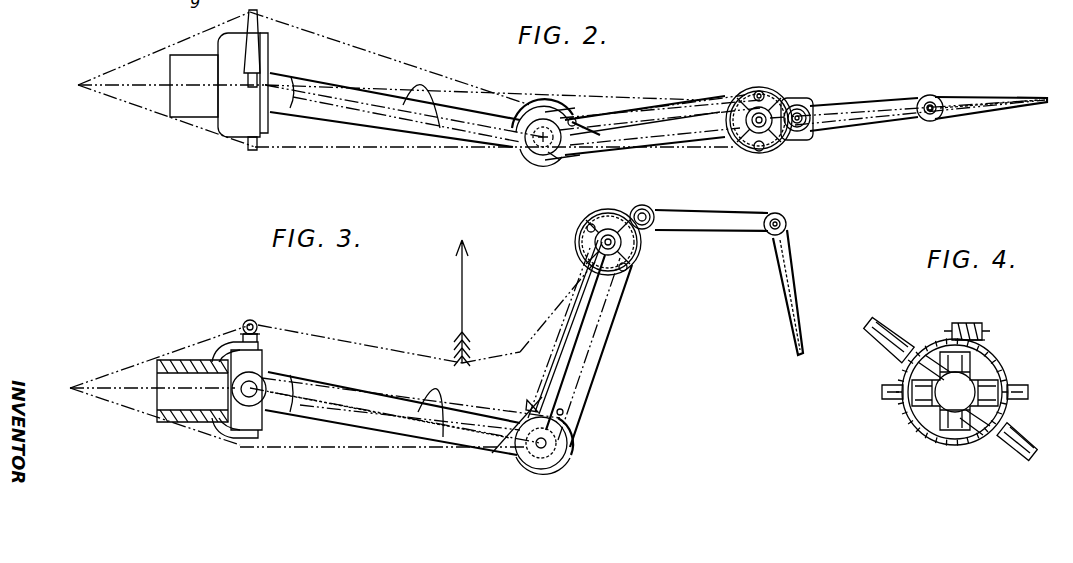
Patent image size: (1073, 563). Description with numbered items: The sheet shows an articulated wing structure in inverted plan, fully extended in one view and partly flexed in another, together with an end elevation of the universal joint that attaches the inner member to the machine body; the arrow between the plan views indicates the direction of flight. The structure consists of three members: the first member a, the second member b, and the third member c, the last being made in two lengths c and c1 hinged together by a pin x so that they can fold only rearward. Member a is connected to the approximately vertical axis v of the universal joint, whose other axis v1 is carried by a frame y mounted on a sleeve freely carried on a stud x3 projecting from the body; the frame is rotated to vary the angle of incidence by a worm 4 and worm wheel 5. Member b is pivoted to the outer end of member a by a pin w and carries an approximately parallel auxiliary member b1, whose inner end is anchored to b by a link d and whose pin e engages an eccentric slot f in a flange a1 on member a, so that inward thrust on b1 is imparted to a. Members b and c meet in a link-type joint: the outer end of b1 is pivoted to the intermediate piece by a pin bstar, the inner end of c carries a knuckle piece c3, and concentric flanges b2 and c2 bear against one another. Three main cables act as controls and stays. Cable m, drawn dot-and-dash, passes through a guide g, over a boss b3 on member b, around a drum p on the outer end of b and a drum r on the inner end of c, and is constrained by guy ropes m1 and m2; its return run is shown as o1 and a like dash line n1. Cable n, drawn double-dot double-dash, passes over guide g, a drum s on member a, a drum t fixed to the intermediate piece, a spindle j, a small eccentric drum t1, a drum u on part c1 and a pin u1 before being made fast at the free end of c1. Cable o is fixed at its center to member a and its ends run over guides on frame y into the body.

In FIG. 2, the cable o is at (162, 64).
In FIG. 3, the cable o is at (116, 375).
In FIG. 2, the lower limit line of motion o1 is at (143, 110).
In FIG. 3, the lower limit line of motion o1 is at (100, 414).
In FIG. 2, the guide g is at (252, 92).
In FIG. 2, the member a is at (395, 110).
In FIG. 3, the member a is at (392, 413).
In FIG. 2, the flange a1 is at (522, 105).
In FIG. 2, the drum u is at (542, 152).
In FIG. 3, the drum u is at (520, 452).
In FIG. 2, the cable m is at (486, 97).
In FIG. 3, the cable m is at (370, 420).
In FIG. 2, the guy rope m1 is at (624, 95).
In FIG. 3, the guy rope m1 is at (520, 384).
In FIG. 2, the guy rope m2 is at (660, 114).
In FIG. 3, the guy rope m2 is at (526, 354).
In FIG. 2, the cable n is at (950, 96).
In FIG. 3, the cable n is at (775, 240).
In FIG. 2, the angle of rotation n1 is at (715, 148).
In FIG. 2, the slot f is at (568, 105).
In FIG. 3, the slot f is at (562, 408).
In FIG. 2, the pin e is at (578, 112).
In FIG. 3, the pin e is at (525, 405).
In FIG. 2, the link d is at (590, 136).
In FIG. 3, the link d is at (511, 425).
In FIG. 2, the member b is at (645, 125).
In FIG. 3, the member b is at (589, 351).
In FIG. 2, the second member b1 is at (700, 97).
In FIG. 3, the second member b1 is at (560, 312).
In FIG. 2, the flange b2 is at (778, 88).
In FIG. 2, the boss b3 is at (565, 155).
In FIG. 3, the boss b3 is at (575, 448).
In FIG. 2, the pin bstar is at (757, 92).
In FIG. 2, the drum s is at (554, 166).
In FIG. 3, the drum s is at (553, 463).
In FIG. 2, the drum t is at (765, 152).
In FIG. 3, the drum t is at (600, 210).
In FIG. 2, the small drum t1 is at (805, 130).
In FIG. 3, the small drum t1 is at (660, 228).
In FIG. 2, the flange c2 is at (800, 104).
In FIG. 2, the knuckle piece c3 is at (808, 104).
In FIG. 3, the knuckle piece c3 is at (646, 205).
In FIG. 2, the spindle j is at (846, 78).
In FIG. 3, the spindle j is at (667, 180).
In FIG. 2, the drum r is at (812, 126).
In FIG. 3, the drum r is at (680, 228).
In FIG. 2, the drum p is at (778, 138).
In FIG. 3, the drum p is at (645, 240).
In FIG. 2, the member c is at (862, 112).
In FIG. 3, the member c is at (700, 212).
In FIG. 2, the part c1 is at (968, 98).
In FIG. 3, the part c1 is at (795, 265).
In FIG. 2, the pin w is at (930, 118).
In FIG. 2, the pin u1 is at (945, 116).
In FIG. 2, the pin x is at (934, 120).
In FIG. 3, the pin x is at (790, 218).
In FIG. 3, the stud x3 is at (165, 422).
In FIG. 3, the axis v is at (258, 378).
In FIG. 4, the axis v is at (1005, 384).
In FIG. 3, the axis v1 is at (232, 345).
In FIG. 4, the axis v1 is at (950, 352).
In FIG. 4, the frame y is at (962, 442).
In FIG. 3, the worm 4 is at (262, 330).
In FIG. 4, the worm 4 is at (988, 340).
In FIG. 3, the worm wheel 5 is at (256, 321).
In FIG. 4, the worm wheel 5 is at (975, 327).